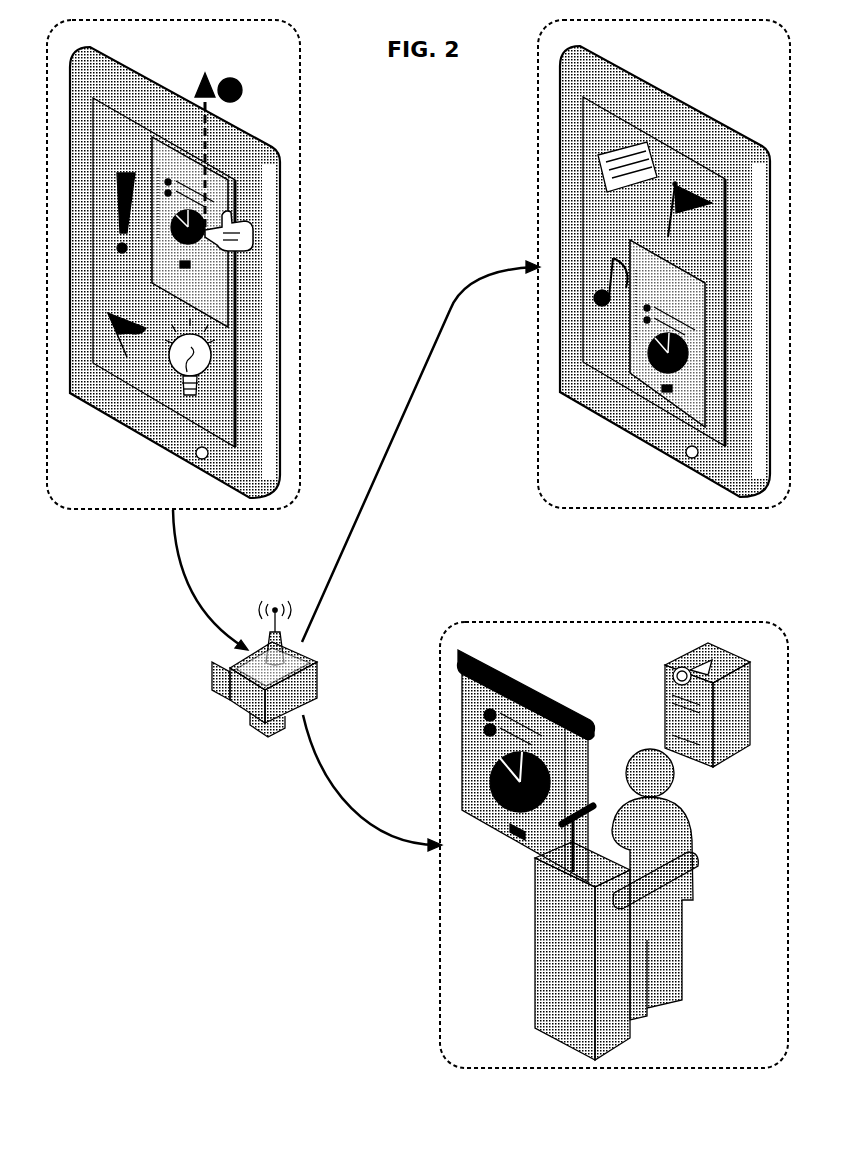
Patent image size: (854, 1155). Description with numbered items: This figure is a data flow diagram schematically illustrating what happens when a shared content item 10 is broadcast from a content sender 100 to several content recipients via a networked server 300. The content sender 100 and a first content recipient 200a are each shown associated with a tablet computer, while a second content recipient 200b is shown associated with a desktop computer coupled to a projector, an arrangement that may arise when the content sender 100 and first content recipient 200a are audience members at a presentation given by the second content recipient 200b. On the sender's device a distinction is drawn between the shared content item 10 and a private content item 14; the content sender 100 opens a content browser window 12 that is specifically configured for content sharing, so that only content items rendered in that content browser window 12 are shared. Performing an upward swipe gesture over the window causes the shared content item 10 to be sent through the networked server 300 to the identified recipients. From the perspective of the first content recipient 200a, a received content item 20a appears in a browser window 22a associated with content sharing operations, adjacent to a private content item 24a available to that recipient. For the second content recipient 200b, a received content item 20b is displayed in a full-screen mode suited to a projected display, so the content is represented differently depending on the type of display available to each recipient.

The content sender 100 is at (226, 333).
The shared content item 10 is at (281, 228).
The content browser window 12 is at (278, 288).
The private content item 14 is at (177, 407).
The networked server 300 is at (245, 713).
The first content recipient 200a is at (602, 292).
The received content item 20a is at (687, 418).
The browser window 22a is at (560, 402).
The private content item 24a is at (607, 175).
The second content recipient 200b is at (554, 845).
The received content item 20b is at (483, 792).